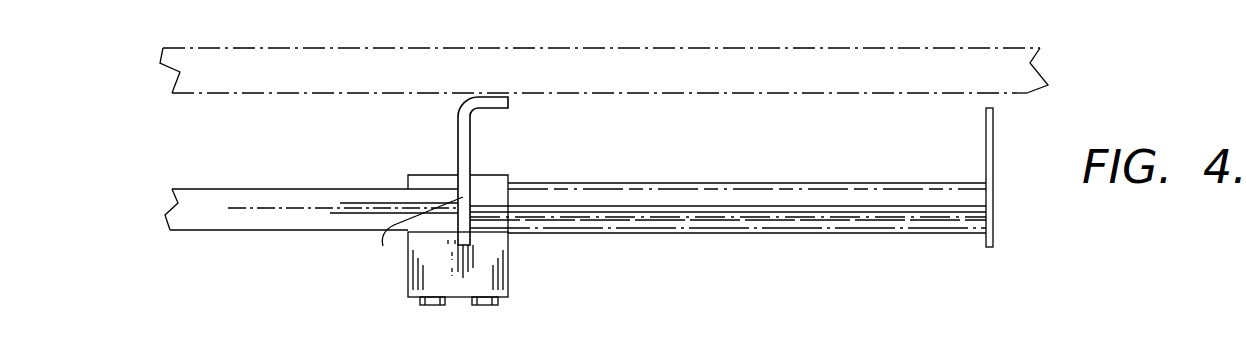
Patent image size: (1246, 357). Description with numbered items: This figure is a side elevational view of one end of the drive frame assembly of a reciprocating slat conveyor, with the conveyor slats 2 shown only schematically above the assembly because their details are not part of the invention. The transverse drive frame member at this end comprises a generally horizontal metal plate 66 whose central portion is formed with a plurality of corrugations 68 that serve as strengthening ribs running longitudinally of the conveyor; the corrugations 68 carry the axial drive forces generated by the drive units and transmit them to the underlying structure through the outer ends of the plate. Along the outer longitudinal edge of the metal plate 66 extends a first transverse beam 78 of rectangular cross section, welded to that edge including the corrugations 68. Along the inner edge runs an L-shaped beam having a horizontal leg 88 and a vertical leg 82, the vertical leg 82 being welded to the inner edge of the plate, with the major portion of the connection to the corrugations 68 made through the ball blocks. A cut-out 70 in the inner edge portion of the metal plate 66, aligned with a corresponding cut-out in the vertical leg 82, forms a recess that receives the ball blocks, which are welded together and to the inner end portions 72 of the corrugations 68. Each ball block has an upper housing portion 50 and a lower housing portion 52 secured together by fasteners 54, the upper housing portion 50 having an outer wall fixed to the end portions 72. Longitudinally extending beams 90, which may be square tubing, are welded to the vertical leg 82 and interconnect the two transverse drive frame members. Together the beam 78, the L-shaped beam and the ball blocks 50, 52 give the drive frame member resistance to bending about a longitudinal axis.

The conveyor slats 2 is at (1018, 83).
The upper housing portion 50 is at (425, 180).
The lower housing portion 52 is at (495, 255).
The fasteners 54 is at (487, 305).
The metal plate 66 is at (870, 208).
The corrugations 68 is at (718, 184).
The cut-out 70 is at (519, 182).
The inner end portions 72 is at (508, 183).
The first transverse beam 78 is at (994, 162).
The vertical leg 82 is at (383, 246).
The horizontal leg 88 is at (498, 103).
The longitudinal beams 90 is at (217, 220).